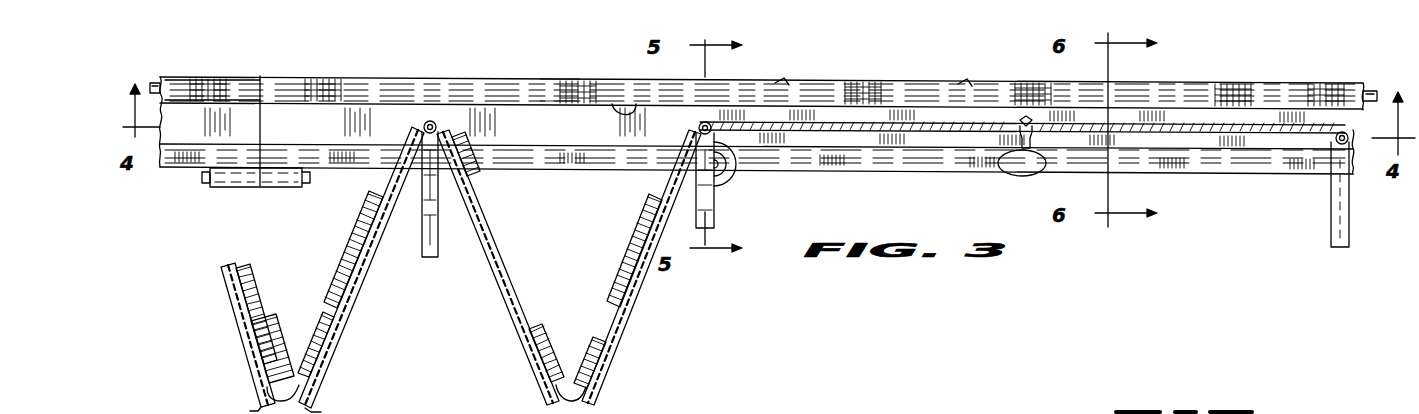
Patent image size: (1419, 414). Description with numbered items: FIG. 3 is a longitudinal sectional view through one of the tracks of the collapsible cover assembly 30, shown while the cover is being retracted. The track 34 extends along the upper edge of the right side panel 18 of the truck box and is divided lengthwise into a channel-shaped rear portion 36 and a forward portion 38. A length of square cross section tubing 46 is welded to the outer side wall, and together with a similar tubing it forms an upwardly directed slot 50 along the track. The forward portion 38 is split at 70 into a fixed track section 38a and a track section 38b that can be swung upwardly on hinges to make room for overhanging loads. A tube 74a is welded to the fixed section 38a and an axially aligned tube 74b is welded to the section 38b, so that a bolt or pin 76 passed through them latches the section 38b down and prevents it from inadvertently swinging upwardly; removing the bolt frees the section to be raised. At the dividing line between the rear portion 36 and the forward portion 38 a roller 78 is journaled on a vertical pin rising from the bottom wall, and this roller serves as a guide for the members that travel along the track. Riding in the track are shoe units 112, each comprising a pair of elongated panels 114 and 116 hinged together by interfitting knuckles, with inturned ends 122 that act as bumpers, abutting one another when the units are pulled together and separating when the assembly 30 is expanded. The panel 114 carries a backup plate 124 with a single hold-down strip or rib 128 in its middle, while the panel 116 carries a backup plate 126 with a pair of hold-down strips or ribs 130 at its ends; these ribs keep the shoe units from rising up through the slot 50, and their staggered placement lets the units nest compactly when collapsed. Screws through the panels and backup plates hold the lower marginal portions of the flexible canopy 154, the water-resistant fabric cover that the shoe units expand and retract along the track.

The right side panel 18 is at (436, 122).
The collapsible cover assembly 30 is at (614, 362).
The track 34 is at (530, 79).
The rear portion of track 36 is at (918, 80).
The forward portion of track 38 is at (388, 79).
The fixed track section 38a is at (567, 162).
The swingable track section 38b is at (186, 78).
The square cross section tubing 46 is at (1312, 92).
The upwardly directed slot 50 is at (632, 104).
The split 70 is at (260, 74).
The tube 74a is at (285, 189).
The tube 74b is at (246, 187).
The bolt or pin 76 is at (205, 178).
The roller 78 is at (732, 177).
The shoe unit 112 is at (376, 266).
The elongated panel 114 is at (344, 308).
The elongated panel 116 is at (250, 322).
The inturned end 122 is at (1034, 180).
The backup plate 124 is at (318, 320).
The backup plate 126 is at (246, 280).
The hold-down strip or rib 128 is at (347, 248).
The hold-down strip or rib 130 is at (498, 176).
The flexible canopy 154 is at (322, 378).